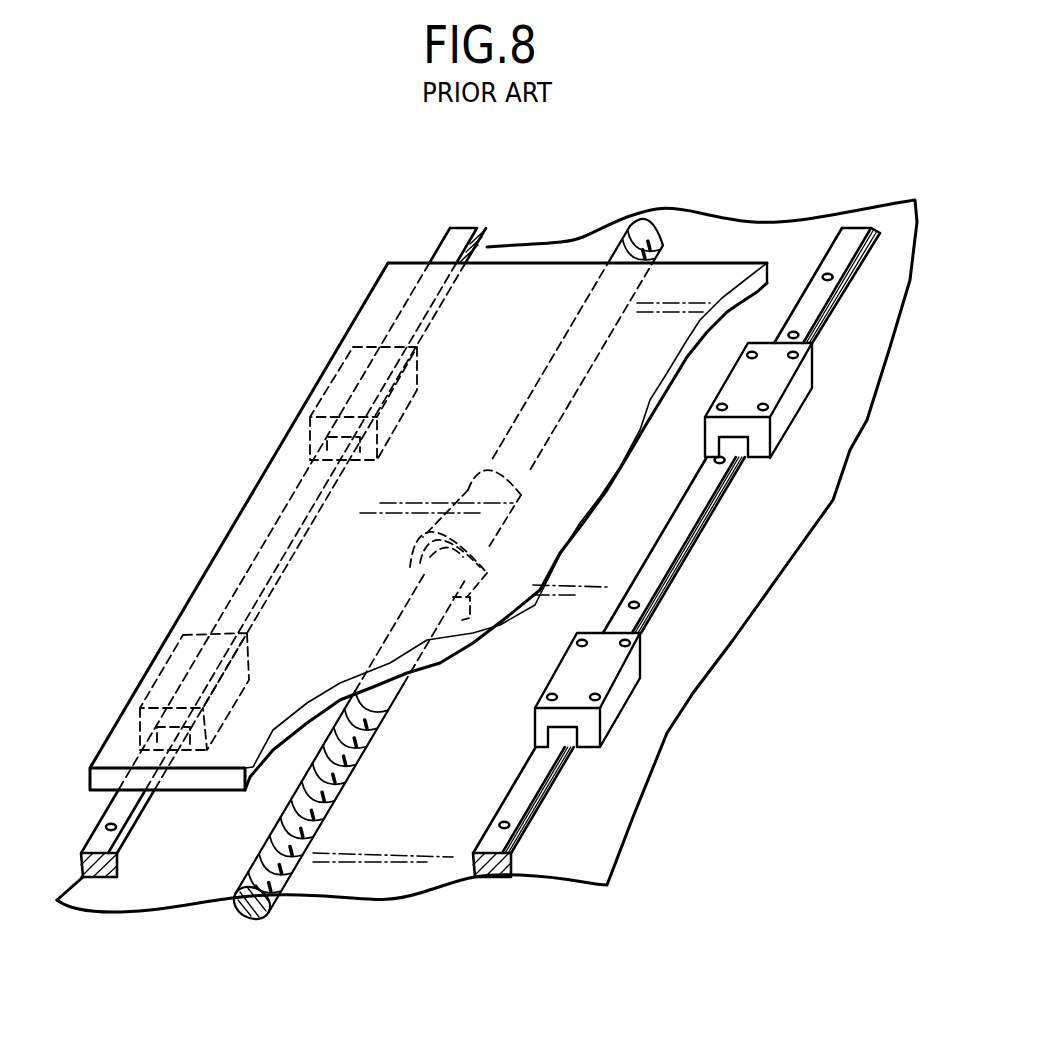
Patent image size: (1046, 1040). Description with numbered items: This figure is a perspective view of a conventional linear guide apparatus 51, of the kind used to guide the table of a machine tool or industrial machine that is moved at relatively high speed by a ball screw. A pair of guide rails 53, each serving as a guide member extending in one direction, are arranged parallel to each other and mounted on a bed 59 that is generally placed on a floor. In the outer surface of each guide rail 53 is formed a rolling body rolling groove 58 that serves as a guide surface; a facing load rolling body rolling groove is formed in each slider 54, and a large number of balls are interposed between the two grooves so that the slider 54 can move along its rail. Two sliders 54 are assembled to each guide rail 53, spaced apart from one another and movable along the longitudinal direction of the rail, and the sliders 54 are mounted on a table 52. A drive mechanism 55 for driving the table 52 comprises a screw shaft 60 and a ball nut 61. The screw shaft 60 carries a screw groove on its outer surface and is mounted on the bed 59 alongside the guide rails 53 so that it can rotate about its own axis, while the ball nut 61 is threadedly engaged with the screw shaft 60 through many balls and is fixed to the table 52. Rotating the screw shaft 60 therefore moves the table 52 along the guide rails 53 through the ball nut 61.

The linear guide apparatus 51 is at (826, 369).
The table 52 is at (350, 300).
The guide rail 53 is at (466, 216).
The slider 54 is at (314, 369).
The drive mechanism 55 is at (361, 782).
The rolling body rolling groove 58 is at (485, 234).
The bed 59 is at (718, 212).
The screw shaft 60 is at (367, 739).
The ball nut 61 is at (468, 603).